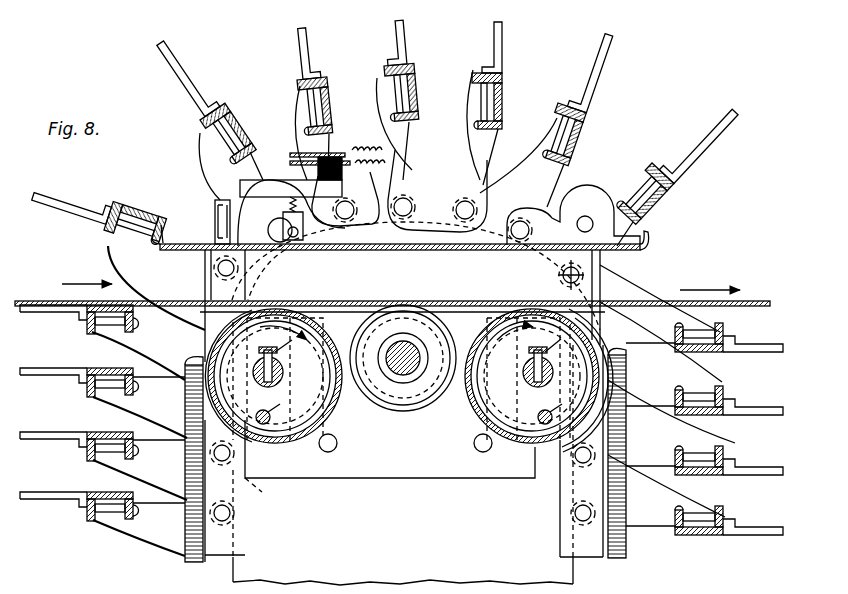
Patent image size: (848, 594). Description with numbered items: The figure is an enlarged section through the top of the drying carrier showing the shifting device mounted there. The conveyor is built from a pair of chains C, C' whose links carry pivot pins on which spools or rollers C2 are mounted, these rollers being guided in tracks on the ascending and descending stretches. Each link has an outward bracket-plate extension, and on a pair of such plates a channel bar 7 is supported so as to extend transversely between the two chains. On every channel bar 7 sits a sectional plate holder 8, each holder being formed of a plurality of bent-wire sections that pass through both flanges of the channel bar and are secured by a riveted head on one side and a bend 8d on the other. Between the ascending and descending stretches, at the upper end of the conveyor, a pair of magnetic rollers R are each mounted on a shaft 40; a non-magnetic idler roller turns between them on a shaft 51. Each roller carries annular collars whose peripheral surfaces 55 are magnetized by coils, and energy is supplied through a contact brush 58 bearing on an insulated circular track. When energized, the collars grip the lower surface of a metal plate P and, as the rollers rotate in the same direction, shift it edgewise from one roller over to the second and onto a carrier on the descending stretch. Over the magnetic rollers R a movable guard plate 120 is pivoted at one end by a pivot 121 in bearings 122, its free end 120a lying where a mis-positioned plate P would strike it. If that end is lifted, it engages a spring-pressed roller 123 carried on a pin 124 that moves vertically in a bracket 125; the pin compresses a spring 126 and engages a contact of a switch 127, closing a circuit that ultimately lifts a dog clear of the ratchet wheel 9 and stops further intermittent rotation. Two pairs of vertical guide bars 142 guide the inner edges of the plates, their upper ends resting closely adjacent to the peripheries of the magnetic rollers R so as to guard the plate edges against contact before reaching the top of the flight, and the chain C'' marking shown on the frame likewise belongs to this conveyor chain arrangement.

The channel bar 7 is at (493, 92).
The sectional plate holder 8 is at (405, 39).
The bend 8d is at (580, 98).
The ratchet wheel 9 is at (547, 277).
The shaft 40 is at (283, 377).
The shaft 51 is at (406, 355).
The peripheral surfaces 55 is at (335, 418).
The contact brush 58 is at (241, 406).
The guard plate 120 is at (462, 250).
The free end of guard plate 120a is at (117, 252).
The pivot 121 is at (586, 214).
The bearings 122 is at (578, 243).
The spring-pressed roller 123 is at (330, 250).
The pin 124 is at (292, 178).
The bracket 125 is at (237, 186).
The spring 126 is at (354, 169).
The switch 127 is at (283, 178).
The vertical guide bars 142 is at (188, 557).
The chain C is at (404, 417).
The chain C' is at (402, 526).
The frame hole C'' is at (400, 515).
The spools or rollers C2 is at (250, 482).
The plates P is at (367, 303).
The magnetic rollers R is at (300, 423).